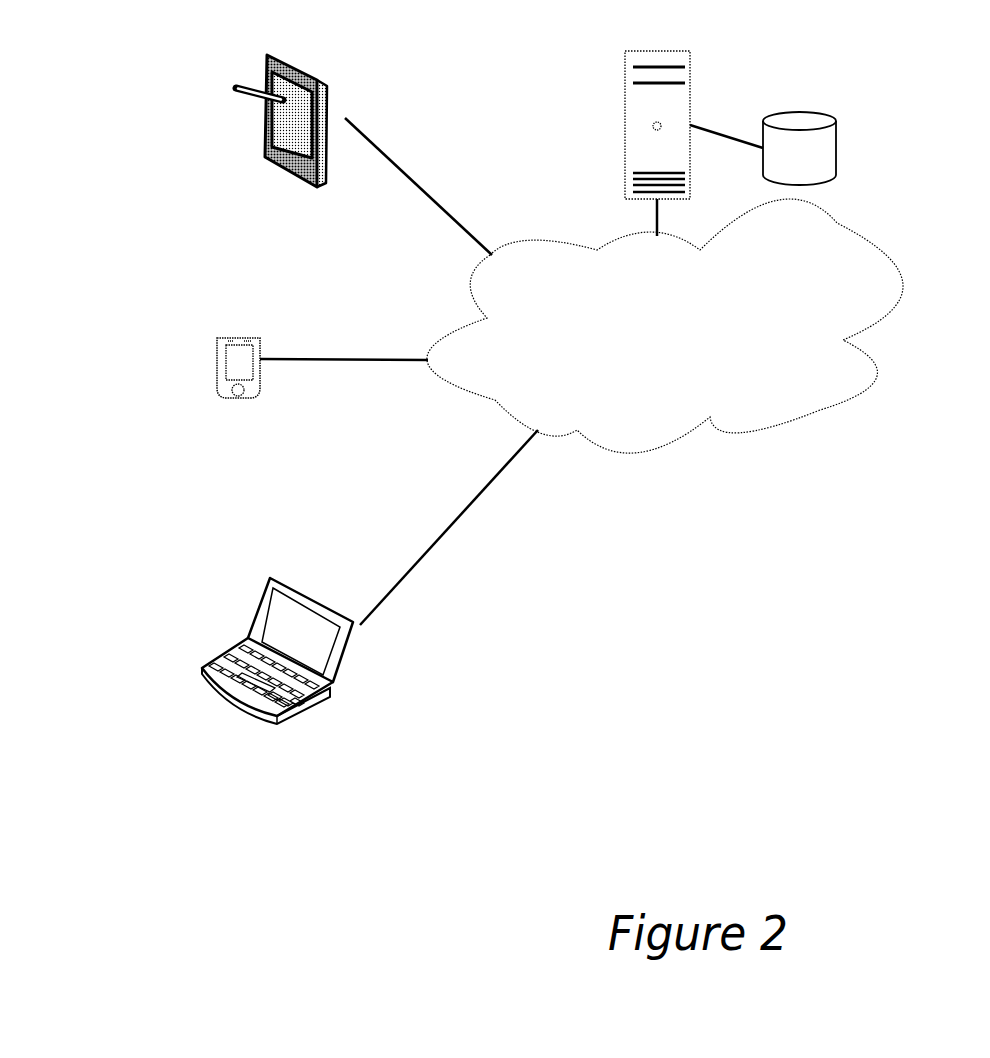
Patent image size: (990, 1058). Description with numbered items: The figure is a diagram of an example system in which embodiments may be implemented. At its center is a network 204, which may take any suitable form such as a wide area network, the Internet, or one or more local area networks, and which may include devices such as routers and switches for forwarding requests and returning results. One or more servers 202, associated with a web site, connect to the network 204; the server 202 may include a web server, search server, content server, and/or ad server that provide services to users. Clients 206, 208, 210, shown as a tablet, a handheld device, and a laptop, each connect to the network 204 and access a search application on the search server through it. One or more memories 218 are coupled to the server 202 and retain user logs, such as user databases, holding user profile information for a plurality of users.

The server 202 is at (695, 75).
The network 204 is at (665, 326).
The client 206 is at (228, 100).
The client 208 is at (210, 352).
The client 210 is at (228, 637).
The memory 218 is at (848, 147).